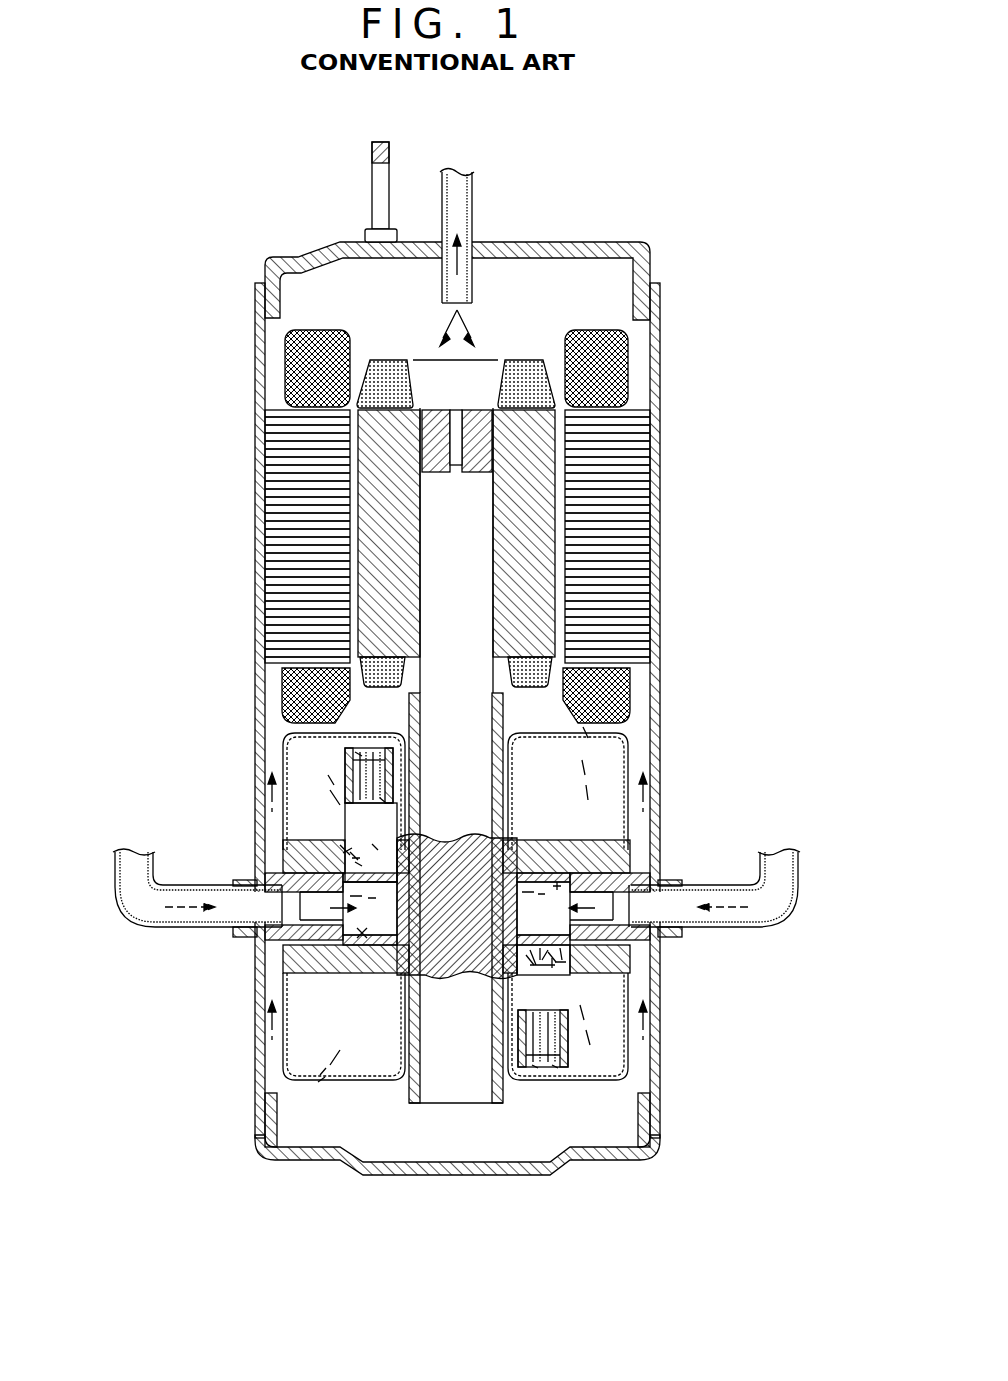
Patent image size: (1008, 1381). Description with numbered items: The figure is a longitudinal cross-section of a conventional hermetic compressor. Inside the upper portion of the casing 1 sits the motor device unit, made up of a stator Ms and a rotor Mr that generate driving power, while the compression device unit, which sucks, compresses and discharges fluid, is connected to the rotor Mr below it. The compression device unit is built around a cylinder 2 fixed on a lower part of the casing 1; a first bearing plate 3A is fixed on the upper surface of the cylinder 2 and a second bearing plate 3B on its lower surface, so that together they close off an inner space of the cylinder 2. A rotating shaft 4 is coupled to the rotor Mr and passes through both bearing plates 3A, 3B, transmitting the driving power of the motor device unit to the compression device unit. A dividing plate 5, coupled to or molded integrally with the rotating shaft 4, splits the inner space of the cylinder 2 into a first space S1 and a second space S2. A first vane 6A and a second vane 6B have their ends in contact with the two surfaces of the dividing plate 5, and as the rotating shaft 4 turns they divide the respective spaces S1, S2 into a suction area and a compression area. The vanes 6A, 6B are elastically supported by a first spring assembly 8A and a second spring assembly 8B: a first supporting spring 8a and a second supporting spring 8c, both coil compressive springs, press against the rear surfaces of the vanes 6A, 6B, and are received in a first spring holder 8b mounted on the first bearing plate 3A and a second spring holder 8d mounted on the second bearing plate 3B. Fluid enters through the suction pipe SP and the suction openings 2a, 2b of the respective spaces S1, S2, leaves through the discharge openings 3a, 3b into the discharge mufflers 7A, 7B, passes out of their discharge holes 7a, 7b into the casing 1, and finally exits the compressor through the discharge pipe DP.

The casing 1 is at (660, 307).
The cylinder 2 is at (257, 947).
The suction opening 2a is at (587, 898).
The suction opening 2b is at (253, 873).
The first bearing plate 3A is at (283, 840).
The second bearing plate 3B is at (287, 978).
The discharge opening 3a is at (252, 772).
The discharge opening 3b is at (657, 991).
The rotating shaft 4 is at (483, 477).
The dividing plate 5 is at (590, 944).
The first vane 6A is at (345, 800).
The second vane 6B is at (563, 1003).
The discharge muffler 7A is at (612, 708).
The discharge muffler 7B is at (368, 1080).
The discharge hole 7a is at (583, 727).
The discharge hole 7b is at (322, 1080).
The first spring assembly 8A is at (175, 615).
The first supporting spring 8a is at (382, 800).
The first spring holder 8b is at (360, 752).
The second spring assembly 8B is at (605, 1236).
The second supporting spring 8c is at (555, 1067).
The second spring holder 8d is at (535, 1067).
The discharge pipe DP is at (475, 198).
The suction pipe SP is at (145, 912).
The rotor Mr is at (357, 435).
The stator Ms is at (278, 447).
The first space S1 is at (628, 843).
The second space S2 is at (362, 938).